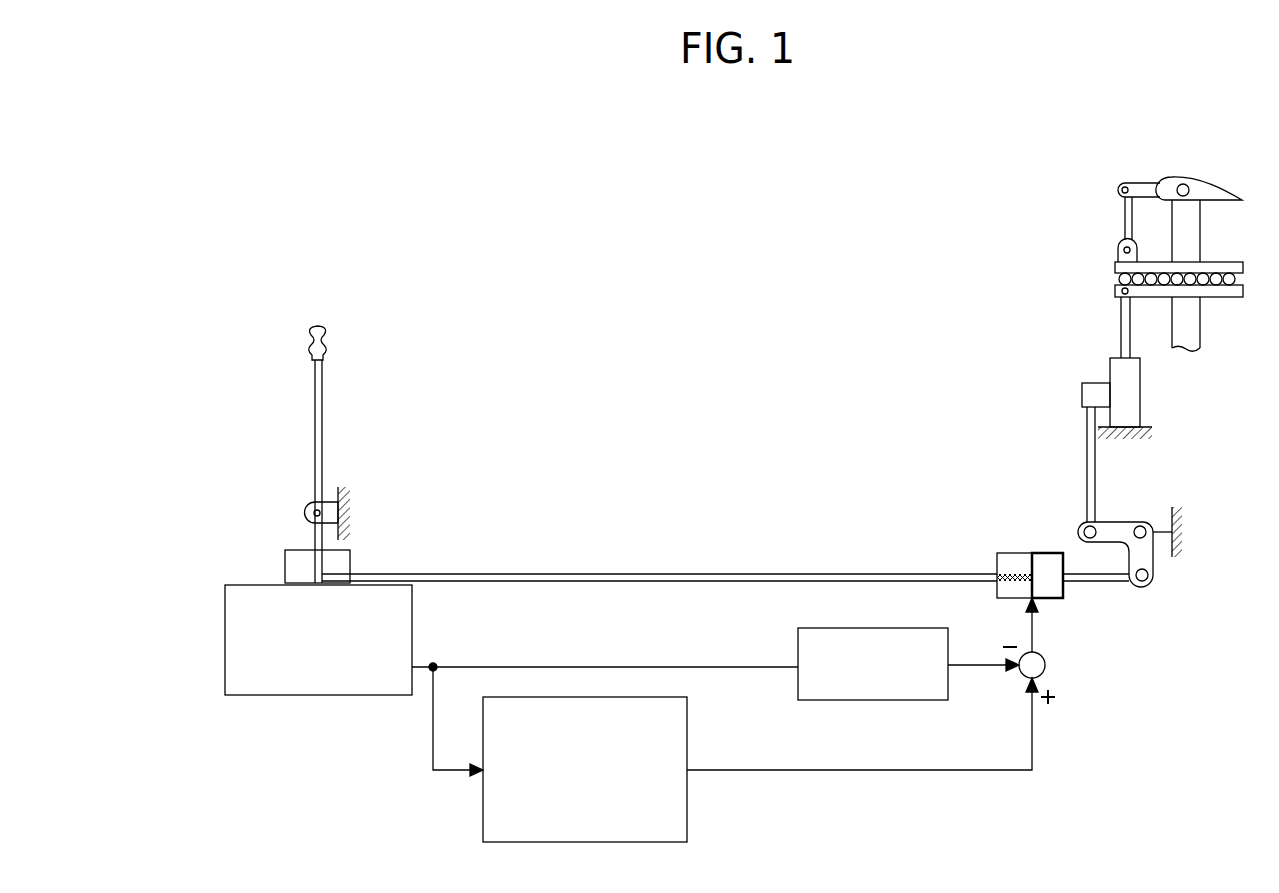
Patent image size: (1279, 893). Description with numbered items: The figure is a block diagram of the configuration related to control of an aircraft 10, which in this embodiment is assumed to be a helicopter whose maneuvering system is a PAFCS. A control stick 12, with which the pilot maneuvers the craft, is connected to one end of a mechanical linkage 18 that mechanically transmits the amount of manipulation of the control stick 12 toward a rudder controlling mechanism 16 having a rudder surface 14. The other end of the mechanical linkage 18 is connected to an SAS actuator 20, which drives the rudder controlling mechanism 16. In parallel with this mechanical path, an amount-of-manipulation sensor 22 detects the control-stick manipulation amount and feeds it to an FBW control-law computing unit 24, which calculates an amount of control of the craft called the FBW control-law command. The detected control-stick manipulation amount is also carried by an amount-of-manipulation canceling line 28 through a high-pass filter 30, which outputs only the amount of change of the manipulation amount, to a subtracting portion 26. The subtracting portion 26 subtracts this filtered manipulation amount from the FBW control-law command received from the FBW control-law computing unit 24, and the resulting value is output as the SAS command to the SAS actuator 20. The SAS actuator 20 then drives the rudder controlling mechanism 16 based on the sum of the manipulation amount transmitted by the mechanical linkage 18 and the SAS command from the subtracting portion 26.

The aircraft 10 is at (812, 282).
The control stick 12 is at (323, 417).
The rudder surface 14 is at (1190, 178).
The rudder controlling mechanism 16 is at (1092, 369).
The mechanical linkage 18 is at (740, 572).
The SAS actuator 20 is at (1045, 553).
The amount-of-manipulation sensor 22 is at (225, 640).
The FBW control-law computing unit 24 is at (688, 808).
The subtracting portion 26 is at (1046, 666).
The amount-of-manipulation canceling line 28 is at (479, 662).
The high-pass filter 30 is at (797, 683).